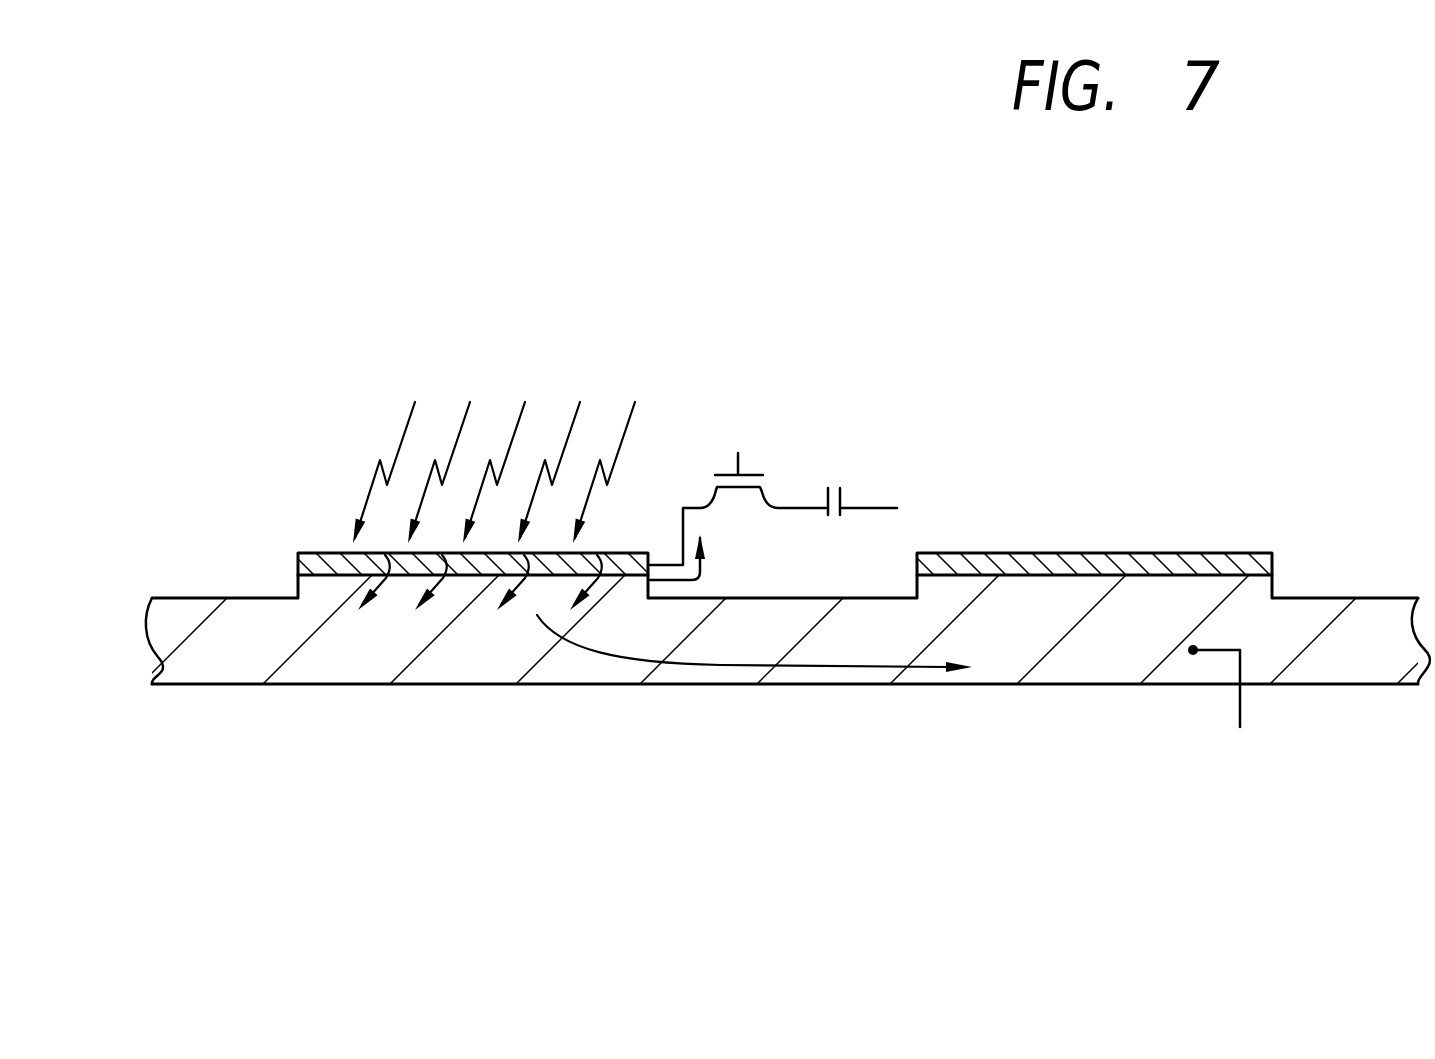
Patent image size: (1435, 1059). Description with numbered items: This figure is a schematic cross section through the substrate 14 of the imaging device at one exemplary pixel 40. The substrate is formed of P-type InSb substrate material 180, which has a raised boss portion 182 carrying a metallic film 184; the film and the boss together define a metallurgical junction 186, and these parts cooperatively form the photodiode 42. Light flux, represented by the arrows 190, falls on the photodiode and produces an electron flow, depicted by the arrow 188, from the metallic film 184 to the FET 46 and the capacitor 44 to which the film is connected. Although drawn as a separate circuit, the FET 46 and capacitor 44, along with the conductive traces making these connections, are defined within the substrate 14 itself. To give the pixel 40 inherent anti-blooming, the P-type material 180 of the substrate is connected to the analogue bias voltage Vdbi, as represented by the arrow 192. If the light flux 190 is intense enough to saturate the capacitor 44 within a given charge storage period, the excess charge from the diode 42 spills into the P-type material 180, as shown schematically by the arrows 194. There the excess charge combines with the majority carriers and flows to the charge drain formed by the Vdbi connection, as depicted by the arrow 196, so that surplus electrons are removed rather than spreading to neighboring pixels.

The substrate 14 is at (197, 658).
The pixel 40 is at (645, 455).
The photodiode 42 is at (298, 458).
The capacitor 44 is at (850, 497).
The FET 46 is at (752, 465).
The P-type InSb substrate material 180 is at (1095, 663).
The boss portion 182 is at (653, 589).
The metallic film 184 is at (325, 562).
The metallurgical junction 186 is at (331, 576).
The arrow depicting electron flow 188 is at (705, 568).
The arrows representing light flux 190 is at (405, 427).
The arrow representing connection to bias voltage Vdbi 192 is at (1240, 702).
The arrows representing spilling of excess charge 194 is at (447, 577).
The arrow depicting flow to charge drain 196 is at (702, 663).